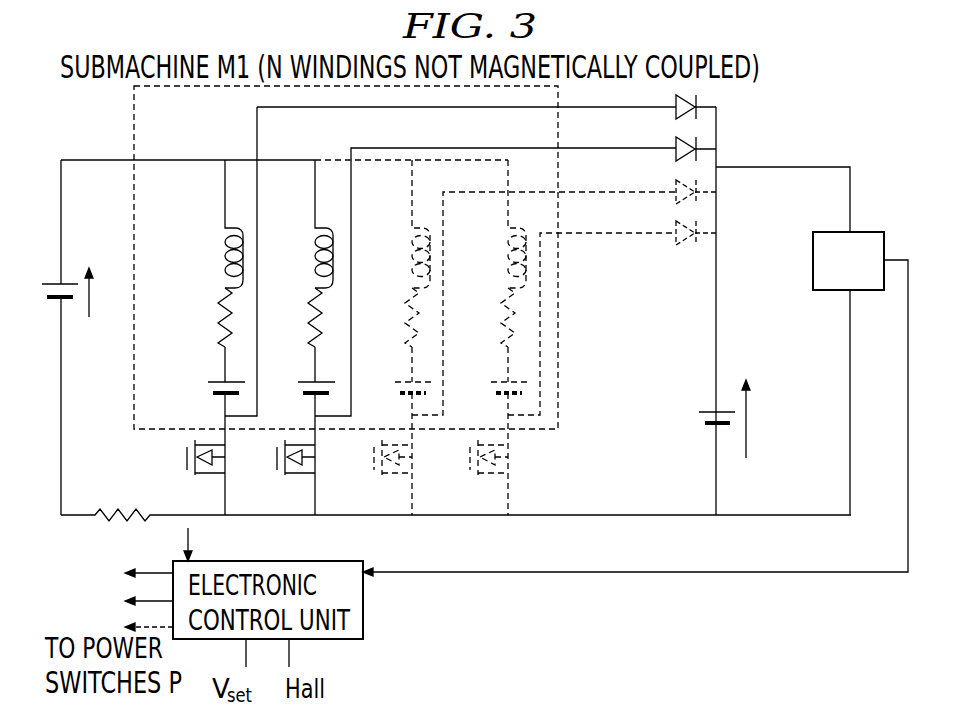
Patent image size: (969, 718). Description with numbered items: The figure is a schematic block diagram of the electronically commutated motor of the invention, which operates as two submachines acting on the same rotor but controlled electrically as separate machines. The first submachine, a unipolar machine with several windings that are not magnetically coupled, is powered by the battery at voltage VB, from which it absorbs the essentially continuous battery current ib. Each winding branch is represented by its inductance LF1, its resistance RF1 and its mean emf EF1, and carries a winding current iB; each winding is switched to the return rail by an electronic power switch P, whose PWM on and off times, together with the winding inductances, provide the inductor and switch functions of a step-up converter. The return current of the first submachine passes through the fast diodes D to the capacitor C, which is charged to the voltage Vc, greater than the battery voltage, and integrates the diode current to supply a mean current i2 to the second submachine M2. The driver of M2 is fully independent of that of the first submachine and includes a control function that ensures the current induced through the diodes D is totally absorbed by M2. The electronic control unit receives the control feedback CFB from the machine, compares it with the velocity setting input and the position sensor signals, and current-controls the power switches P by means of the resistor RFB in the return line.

The current-control feedback resistor RFB is at (456, 491).
The battery current ib is at (284, 135).
The battery voltage VB is at (83, 292).
The winding inductance LF1 is at (201, 224).
The winding resistance RF1 is at (197, 312).
The winding current iB is at (241, 339).
The winding mean emf EF1 is at (202, 385).
The electronic power switch P is at (189, 457).
The fast diodes D is at (500, 170).
The mean output current i2 is at (783, 180).
The second submachine M2 is at (848, 261).
The capacitor C is at (706, 418).
The capacitor voltage Vc is at (760, 419).
The control feedback CFB is at (635, 418).